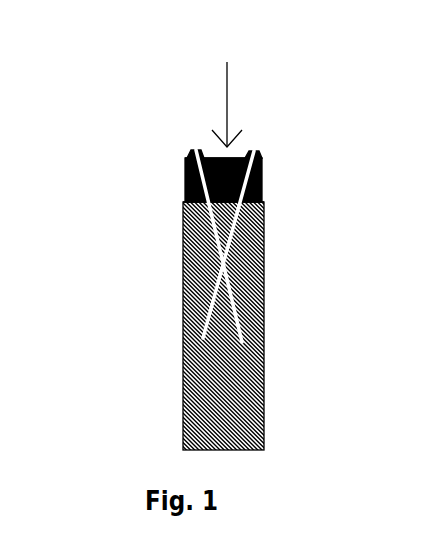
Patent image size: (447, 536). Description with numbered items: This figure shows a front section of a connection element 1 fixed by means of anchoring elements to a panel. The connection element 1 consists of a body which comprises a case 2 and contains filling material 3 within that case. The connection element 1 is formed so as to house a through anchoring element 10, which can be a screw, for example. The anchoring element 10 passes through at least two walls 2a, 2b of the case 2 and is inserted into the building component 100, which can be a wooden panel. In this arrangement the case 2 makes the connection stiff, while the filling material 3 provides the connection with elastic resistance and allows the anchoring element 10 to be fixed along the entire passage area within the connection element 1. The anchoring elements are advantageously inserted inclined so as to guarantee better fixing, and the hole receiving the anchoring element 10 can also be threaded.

The connection element 1 is at (222, 85).
The case 2 is at (263, 185).
The wall 2a is at (205, 150).
The wall 2b is at (185, 205).
The filling material 3 is at (184, 179).
The through anchoring element 10 is at (252, 151).
The building component 100 is at (266, 277).